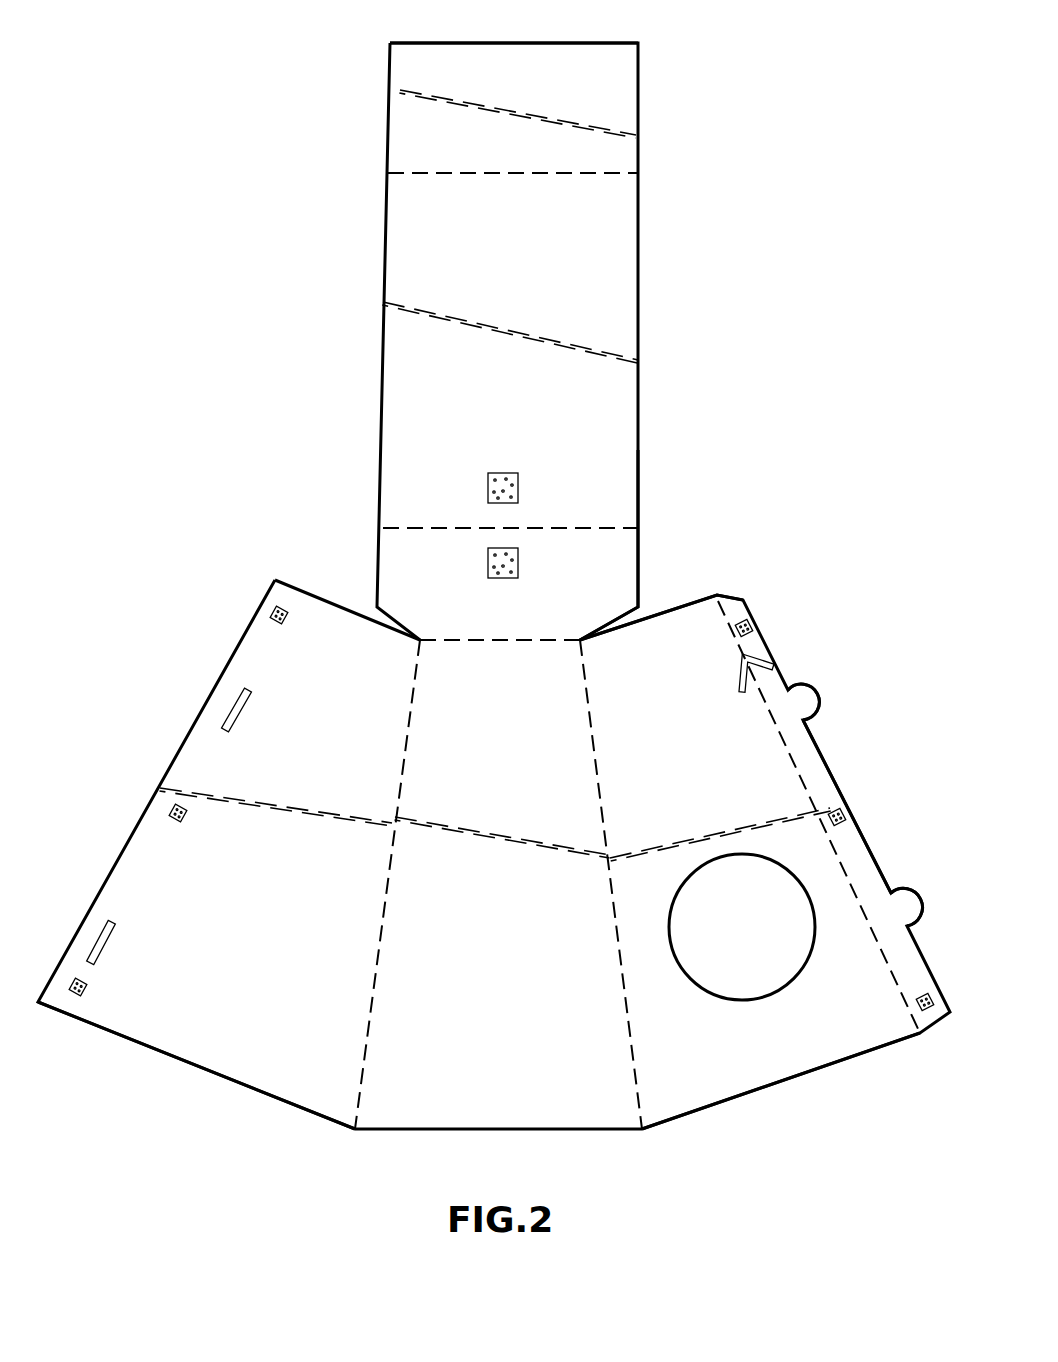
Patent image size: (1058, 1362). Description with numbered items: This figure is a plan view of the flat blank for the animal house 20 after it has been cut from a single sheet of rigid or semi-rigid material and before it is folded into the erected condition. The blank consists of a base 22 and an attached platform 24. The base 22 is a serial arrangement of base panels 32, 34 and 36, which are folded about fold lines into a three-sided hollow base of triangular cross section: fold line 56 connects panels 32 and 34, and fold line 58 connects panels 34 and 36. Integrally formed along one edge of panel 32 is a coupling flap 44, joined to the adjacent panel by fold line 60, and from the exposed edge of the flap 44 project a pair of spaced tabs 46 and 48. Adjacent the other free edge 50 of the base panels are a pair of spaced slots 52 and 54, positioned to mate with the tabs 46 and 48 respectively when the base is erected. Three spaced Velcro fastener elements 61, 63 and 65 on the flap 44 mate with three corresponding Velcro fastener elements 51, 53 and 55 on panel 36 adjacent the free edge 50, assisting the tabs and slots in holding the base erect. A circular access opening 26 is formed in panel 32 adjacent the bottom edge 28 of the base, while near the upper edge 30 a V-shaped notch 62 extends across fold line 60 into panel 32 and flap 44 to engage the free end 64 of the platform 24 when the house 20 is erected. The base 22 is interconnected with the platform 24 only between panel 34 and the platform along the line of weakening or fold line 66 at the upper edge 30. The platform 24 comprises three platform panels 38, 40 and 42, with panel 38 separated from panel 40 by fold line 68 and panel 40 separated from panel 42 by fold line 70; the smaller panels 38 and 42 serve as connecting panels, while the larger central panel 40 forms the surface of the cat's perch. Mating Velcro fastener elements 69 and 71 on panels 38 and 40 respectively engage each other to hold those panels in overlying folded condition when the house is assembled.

The house 20 is at (268, 462).
The base 22 is at (178, 672).
The platform 24 is at (690, 284).
The circular access opening 26 is at (728, 968).
The bottom edge 28 is at (745, 1100).
The upper edge 30 is at (685, 600).
The base panel 32 is at (668, 660).
The base panel 34 is at (218, 1030).
The base panel 36 is at (560, 1128).
The platform panel 38 is at (612, 560).
The platform panel 40 is at (612, 323).
The platform panel 42 is at (612, 100).
The coupling flap 44 is at (806, 748).
The tab 46 is at (818, 690).
The tab 48 is at (908, 901).
The free edge 50 is at (155, 790).
The Velcro fastener element 51 is at (272, 608).
The slot 52 is at (245, 704).
The Velcro fastener element 53 is at (185, 818).
The slot 54 is at (110, 935).
The Velcro fastener element 55 is at (88, 988).
The fold line 56 is at (612, 893).
The fold line 58 is at (405, 763).
The fold line 60 is at (770, 715).
The Velcro fastener element 61 is at (755, 628).
The V-shaped notch 62 is at (774, 666).
The Velcro fastener element 63 is at (845, 812).
The free end 64 is at (513, 43).
The Velcro fastener element 65 is at (918, 1003).
The fold line 66 is at (500, 641).
The fold line 68 is at (435, 528).
The Velcro fastener element 69 is at (519, 560).
The fold line 70 is at (433, 173).
The Velcro fastener element 71 is at (500, 473).